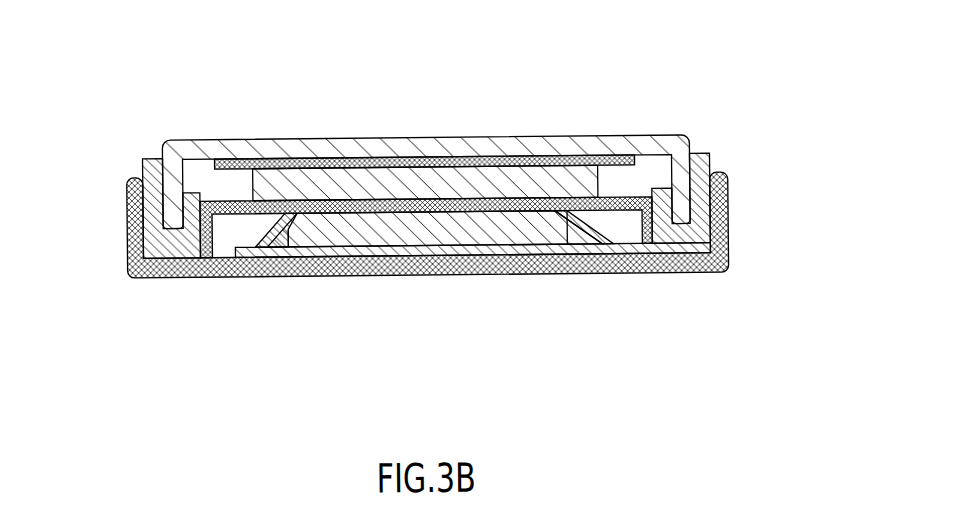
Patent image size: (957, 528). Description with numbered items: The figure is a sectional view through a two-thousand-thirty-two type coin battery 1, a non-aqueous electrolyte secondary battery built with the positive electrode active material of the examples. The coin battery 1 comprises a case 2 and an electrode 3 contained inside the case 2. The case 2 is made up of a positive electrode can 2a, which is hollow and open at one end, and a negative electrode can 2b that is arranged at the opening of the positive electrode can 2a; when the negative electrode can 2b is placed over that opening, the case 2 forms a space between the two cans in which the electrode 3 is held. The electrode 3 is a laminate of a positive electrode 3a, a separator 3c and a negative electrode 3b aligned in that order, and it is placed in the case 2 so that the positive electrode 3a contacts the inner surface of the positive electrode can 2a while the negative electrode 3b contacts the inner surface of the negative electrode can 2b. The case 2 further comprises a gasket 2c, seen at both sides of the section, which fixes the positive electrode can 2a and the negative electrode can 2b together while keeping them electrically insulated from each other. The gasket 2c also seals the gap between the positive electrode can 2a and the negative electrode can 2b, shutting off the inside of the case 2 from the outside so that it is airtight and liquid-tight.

The 2032 type coin battery 1 is at (446, 102).
The case 2 is at (787, 82).
The positive electrode can 2a is at (730, 201).
The negative electrode can 2b is at (667, 138).
The gasket 2c is at (702, 156).
The electrode 3 is at (648, 353).
The positive electrode 3a is at (503, 246).
The negative electrode 3b is at (621, 207).
The separator 3c is at (545, 218).